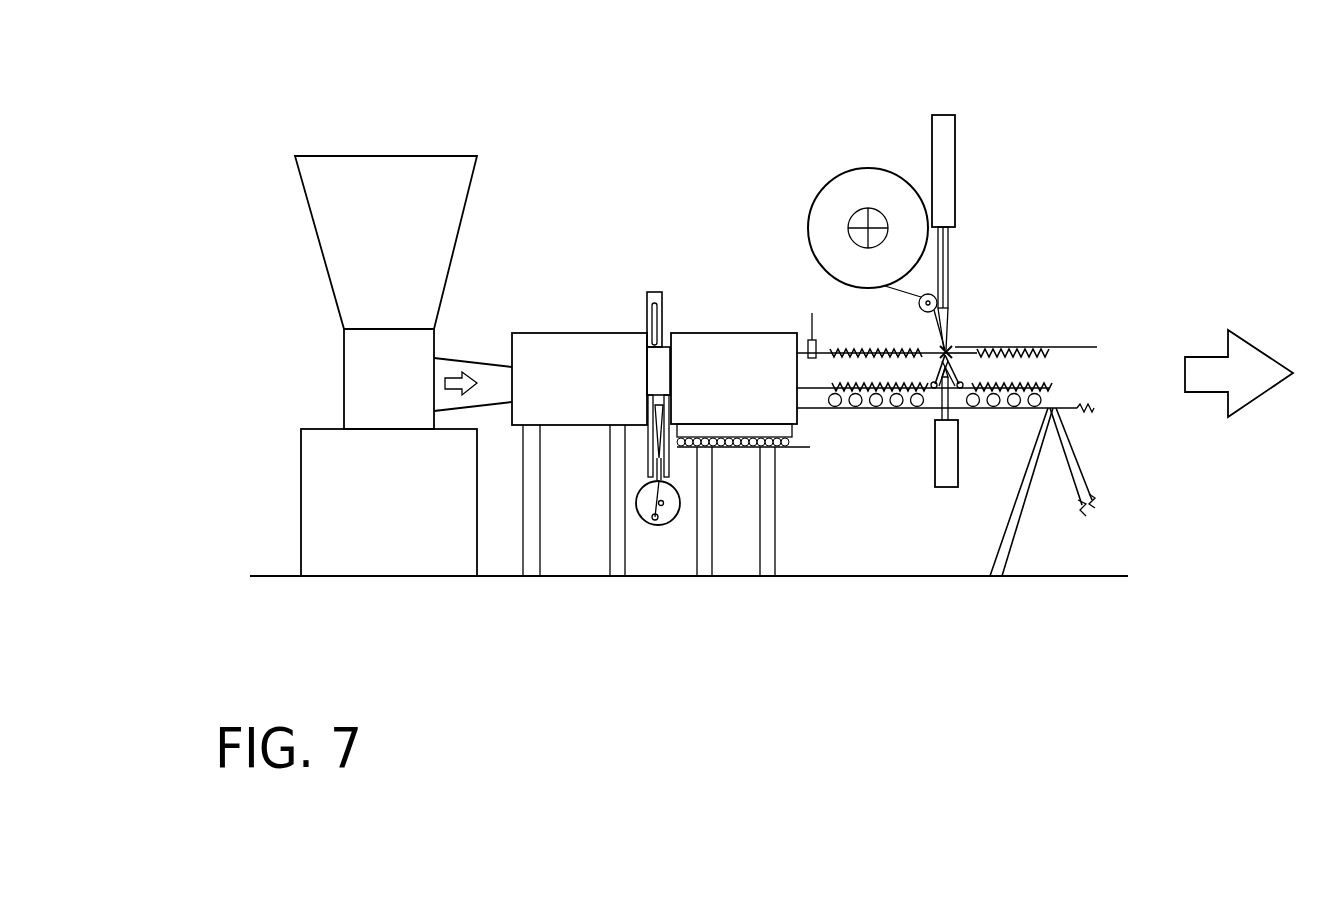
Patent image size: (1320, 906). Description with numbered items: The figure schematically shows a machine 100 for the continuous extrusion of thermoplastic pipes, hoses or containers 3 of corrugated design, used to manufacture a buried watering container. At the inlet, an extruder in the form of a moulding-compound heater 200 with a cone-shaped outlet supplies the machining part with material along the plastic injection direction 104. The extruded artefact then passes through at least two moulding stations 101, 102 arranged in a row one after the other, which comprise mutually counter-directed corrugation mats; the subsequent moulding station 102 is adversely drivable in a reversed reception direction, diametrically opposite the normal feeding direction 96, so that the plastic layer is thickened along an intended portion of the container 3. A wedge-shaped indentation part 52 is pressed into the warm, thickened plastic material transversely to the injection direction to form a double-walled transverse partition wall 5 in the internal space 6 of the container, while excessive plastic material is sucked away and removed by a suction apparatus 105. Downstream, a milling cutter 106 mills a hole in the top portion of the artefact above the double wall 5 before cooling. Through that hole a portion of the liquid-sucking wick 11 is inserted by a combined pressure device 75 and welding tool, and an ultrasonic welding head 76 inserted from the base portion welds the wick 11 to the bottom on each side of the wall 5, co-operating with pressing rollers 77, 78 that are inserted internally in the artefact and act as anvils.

The machine 100 is at (518, 164).
The moulding-compound heater 200 is at (360, 385).
The plastic injection direction 104 is at (501, 394).
The moulding station 101 is at (545, 343).
The subsequent moulding station 102 is at (737, 415).
The suction apparatus 105 is at (633, 280).
The wedge-shaped indentation part 52 is at (636, 481).
The milling cutter 106 is at (797, 307).
The liquid-sucking wick 11 is at (853, 172).
The combined pressure device 75 is at (965, 239).
The double partition wall 5 is at (955, 336).
The container 3 is at (1049, 336).
The internal space 6 is at (890, 367).
The pressing roller 77 is at (933, 388).
The pressing roller 78 is at (961, 388).
The ultrasonic welding head 76 is at (938, 504).
The normal feeding direction 96 is at (1239, 344).